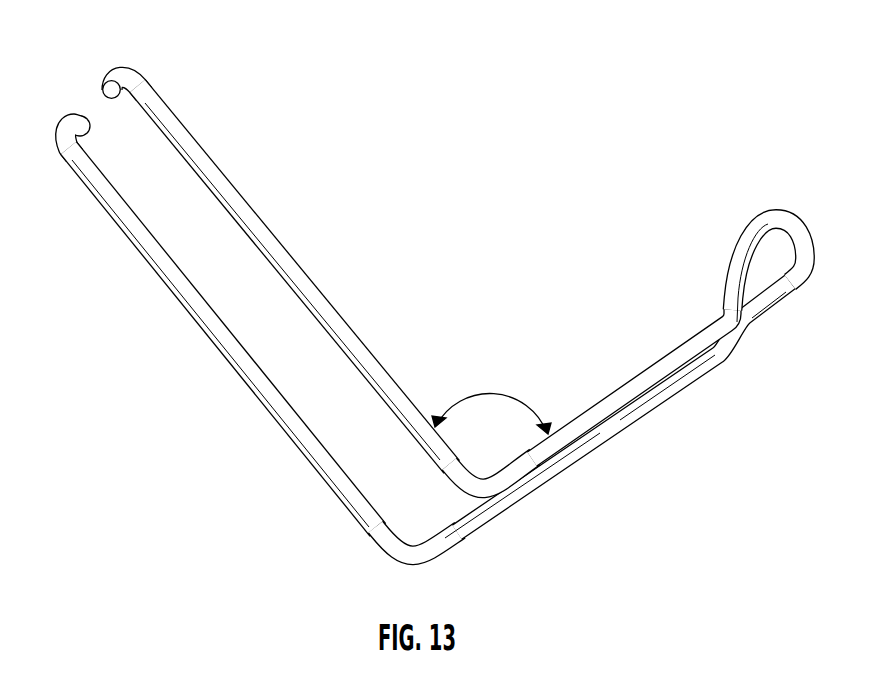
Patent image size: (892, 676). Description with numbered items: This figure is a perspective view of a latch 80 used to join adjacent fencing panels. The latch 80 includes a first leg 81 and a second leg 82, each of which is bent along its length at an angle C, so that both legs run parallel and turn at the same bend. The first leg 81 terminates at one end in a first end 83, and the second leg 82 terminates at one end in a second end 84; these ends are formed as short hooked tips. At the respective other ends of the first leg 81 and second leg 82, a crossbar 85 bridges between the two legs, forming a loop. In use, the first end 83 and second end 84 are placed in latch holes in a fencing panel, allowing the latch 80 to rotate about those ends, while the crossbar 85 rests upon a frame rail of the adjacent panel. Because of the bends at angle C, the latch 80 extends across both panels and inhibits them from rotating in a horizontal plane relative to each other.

The latch 80 is at (429, 288).
The first leg 81 is at (229, 341).
The second leg 82 is at (216, 192).
The first end 83 is at (80, 121).
The second end 84 is at (112, 88).
The crossbar 85 is at (776, 227).
The angle C is at (494, 393).